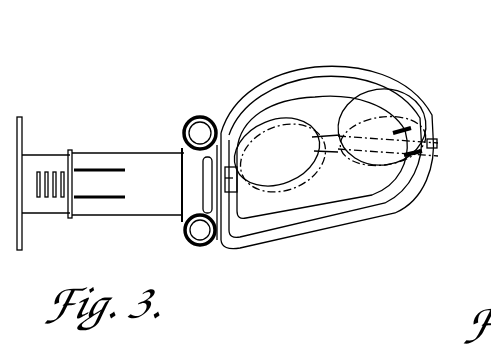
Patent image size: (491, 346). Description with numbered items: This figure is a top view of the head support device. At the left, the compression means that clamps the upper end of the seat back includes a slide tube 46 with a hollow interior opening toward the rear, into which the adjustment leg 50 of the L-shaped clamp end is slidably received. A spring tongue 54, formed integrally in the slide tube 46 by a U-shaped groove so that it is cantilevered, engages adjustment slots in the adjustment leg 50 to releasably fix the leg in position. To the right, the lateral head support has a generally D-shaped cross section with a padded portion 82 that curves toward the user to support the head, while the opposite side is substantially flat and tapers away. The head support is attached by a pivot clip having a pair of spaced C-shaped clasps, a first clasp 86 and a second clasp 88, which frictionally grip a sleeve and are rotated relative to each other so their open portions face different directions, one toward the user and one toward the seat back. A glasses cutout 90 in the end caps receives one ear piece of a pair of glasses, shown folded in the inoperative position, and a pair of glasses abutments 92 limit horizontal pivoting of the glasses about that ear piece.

The slide tube 46 is at (117, 152).
The adjustment leg 50 is at (45, 155).
The spring tongue 54 is at (88, 182).
The padded portion 82 is at (313, 65).
The first clasp 86 is at (182, 126).
The second clasp 88 is at (197, 247).
The glasses cutout 90 is at (232, 192).
The glasses abutments 92 is at (401, 131).